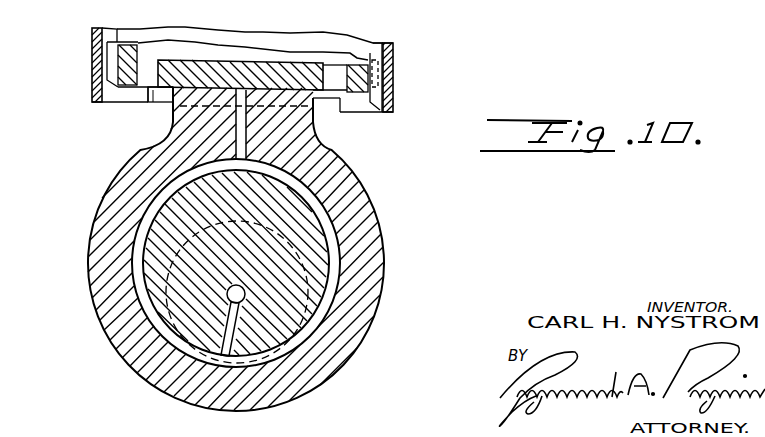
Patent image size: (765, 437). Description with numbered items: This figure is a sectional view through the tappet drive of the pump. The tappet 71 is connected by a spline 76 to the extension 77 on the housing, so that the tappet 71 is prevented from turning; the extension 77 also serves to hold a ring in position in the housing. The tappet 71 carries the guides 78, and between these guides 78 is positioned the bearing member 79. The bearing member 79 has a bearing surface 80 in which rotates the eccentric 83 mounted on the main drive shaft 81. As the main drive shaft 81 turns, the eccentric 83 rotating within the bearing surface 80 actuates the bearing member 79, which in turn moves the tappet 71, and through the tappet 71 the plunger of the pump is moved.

The tappet 71 is at (187, 72).
The spline 76 is at (112, 63).
The extension 77 is at (92, 42).
The guides 78 is at (147, 102).
The bearing member 79 is at (340, 175).
The bearing surface 80 is at (325, 229).
The main drive shaft 81 is at (300, 272).
The eccentric 83 is at (175, 218).